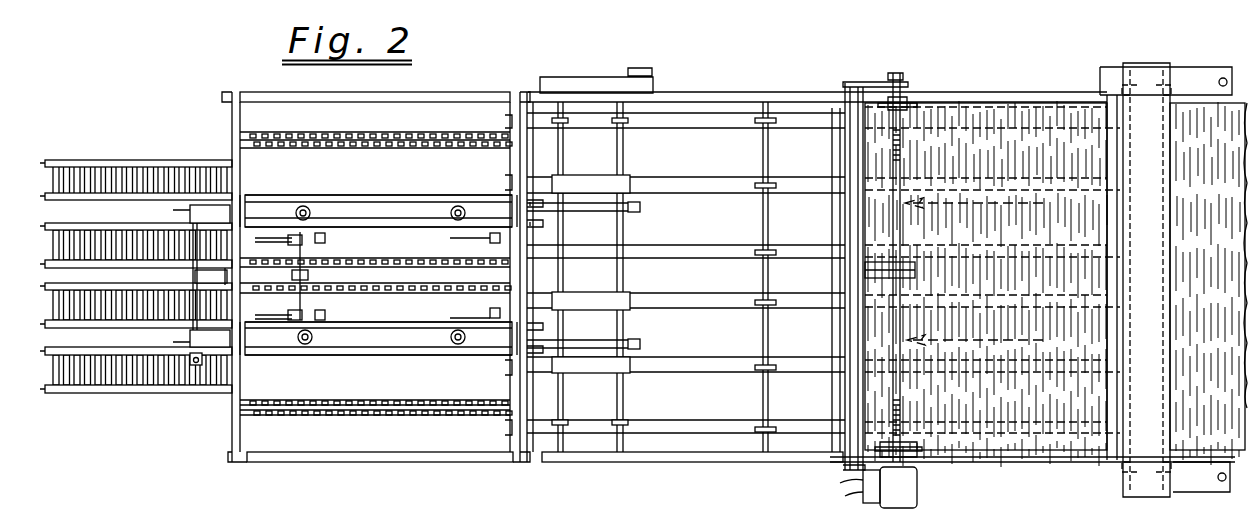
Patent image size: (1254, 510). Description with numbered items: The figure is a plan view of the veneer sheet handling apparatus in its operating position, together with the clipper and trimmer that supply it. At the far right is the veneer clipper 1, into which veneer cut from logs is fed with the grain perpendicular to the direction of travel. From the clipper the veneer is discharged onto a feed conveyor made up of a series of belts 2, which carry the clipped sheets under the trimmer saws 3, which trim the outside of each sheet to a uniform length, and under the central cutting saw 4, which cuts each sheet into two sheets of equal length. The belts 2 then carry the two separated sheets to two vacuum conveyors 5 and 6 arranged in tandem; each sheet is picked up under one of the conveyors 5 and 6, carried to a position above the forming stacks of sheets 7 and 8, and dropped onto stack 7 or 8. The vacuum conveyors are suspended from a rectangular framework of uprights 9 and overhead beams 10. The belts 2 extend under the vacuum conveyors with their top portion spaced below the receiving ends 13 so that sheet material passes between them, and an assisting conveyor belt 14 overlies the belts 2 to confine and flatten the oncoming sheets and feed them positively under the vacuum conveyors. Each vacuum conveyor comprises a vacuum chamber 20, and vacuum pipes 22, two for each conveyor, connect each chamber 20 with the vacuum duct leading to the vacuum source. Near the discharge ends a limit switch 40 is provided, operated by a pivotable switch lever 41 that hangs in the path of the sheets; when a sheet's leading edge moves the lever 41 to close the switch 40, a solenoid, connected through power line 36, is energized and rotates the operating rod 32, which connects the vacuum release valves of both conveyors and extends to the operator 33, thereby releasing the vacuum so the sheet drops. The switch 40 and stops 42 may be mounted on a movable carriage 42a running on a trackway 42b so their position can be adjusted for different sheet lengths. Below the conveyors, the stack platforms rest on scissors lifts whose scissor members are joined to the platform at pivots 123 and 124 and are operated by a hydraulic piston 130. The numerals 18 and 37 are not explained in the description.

The veneer clipper 1 is at (1171, 57).
The belts 2 is at (704, 176).
The trimmer saws 3 is at (920, 95).
The central cutting saw 4 is at (926, 275).
The vacuum conveyor 5 is at (459, 197).
The vacuum conveyor 6 is at (406, 322).
The stack of sheets 7 is at (402, 140).
The stack of sheets 8 is at (398, 418).
The uprights 9 is at (222, 97).
The overhead beams 10 is at (362, 458).
The receiving ends 13 is at (557, 225).
The assisting conveyor belt 14 is at (597, 177).
The top beam 18 is at (390, 95).
The vacuum chamber 20 is at (420, 200).
The vacuum pipes 22 is at (305, 208).
The operating rod 32 is at (193, 276).
The operator 33 is at (190, 362).
The power line 36 is at (494, 243).
The link 37 is at (451, 239).
The limit switch 40 is at (325, 238).
The switch lever 41 is at (292, 245).
The stops 42 is at (275, 238).
The carriage 42a is at (310, 258).
The trackway 42b is at (360, 270).
The pivot 123 is at (300, 140).
The pivot 124 is at (436, 140).
The hydraulic piston 130 is at (598, 212).